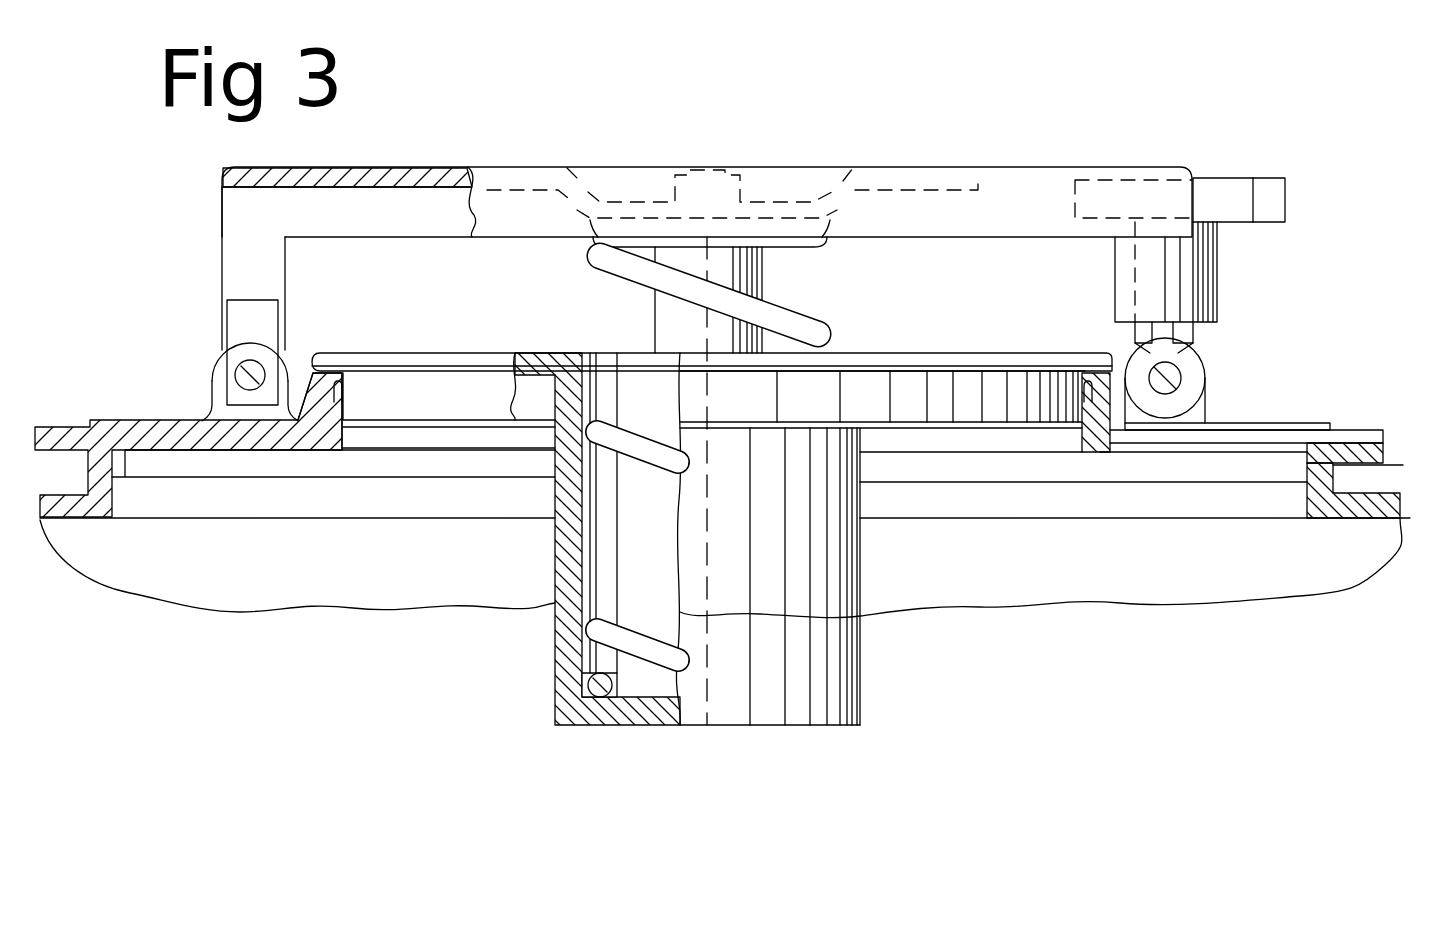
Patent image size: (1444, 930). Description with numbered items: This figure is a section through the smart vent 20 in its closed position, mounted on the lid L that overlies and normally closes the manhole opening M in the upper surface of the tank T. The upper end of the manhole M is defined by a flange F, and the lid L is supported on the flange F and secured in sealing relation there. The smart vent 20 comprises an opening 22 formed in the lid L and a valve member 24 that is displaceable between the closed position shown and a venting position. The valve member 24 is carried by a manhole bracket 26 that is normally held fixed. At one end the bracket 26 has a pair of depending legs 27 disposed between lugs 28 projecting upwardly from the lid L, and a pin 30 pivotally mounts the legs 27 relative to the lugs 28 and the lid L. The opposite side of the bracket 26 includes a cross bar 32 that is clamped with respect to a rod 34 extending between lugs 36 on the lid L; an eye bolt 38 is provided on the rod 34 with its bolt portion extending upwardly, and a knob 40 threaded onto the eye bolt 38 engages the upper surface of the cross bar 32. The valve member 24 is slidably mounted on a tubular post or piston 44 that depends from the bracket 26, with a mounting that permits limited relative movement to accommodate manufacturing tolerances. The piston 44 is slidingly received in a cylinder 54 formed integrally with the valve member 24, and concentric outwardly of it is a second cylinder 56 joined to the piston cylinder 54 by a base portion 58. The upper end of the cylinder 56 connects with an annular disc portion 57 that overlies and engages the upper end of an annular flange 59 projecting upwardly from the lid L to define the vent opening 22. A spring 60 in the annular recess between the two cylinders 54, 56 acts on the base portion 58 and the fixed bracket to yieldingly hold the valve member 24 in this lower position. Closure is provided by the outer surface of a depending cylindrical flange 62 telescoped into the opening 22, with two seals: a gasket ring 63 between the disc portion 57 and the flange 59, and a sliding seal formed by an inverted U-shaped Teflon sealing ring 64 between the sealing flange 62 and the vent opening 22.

The smart vent 20 is at (1188, 130).
The opening 22 is at (1075, 440).
The valve member 24 is at (976, 352).
The manhole bracket 26 is at (808, 160).
The depending legs 27 is at (245, 250).
The lugs 28 is at (222, 392).
The pin 30 is at (238, 370).
The cross bar 32 is at (1150, 320).
The rod 34 is at (1182, 370).
The lugs 36 is at (1207, 398).
The eye bolt 38 is at (1200, 337).
The knob 40 is at (1252, 178).
The tubular post or piston 44 is at (765, 262).
The cylinder 54 is at (604, 353).
The second cylinder 56 is at (555, 552).
The annular disc portion 57 is at (322, 353).
The base portion 58 is at (586, 684).
The annular flange 59 is at (332, 395).
The spring 60 is at (597, 255).
The depending cylindrical flange 62 is at (1105, 422).
The gasket ring 63 is at (1112, 366).
The sealing ring 64 is at (343, 395).
The manhole opening M is at (112, 500).
The lid L is at (1355, 430).
The flange F is at (1385, 458).
The tank T is at (1385, 498).